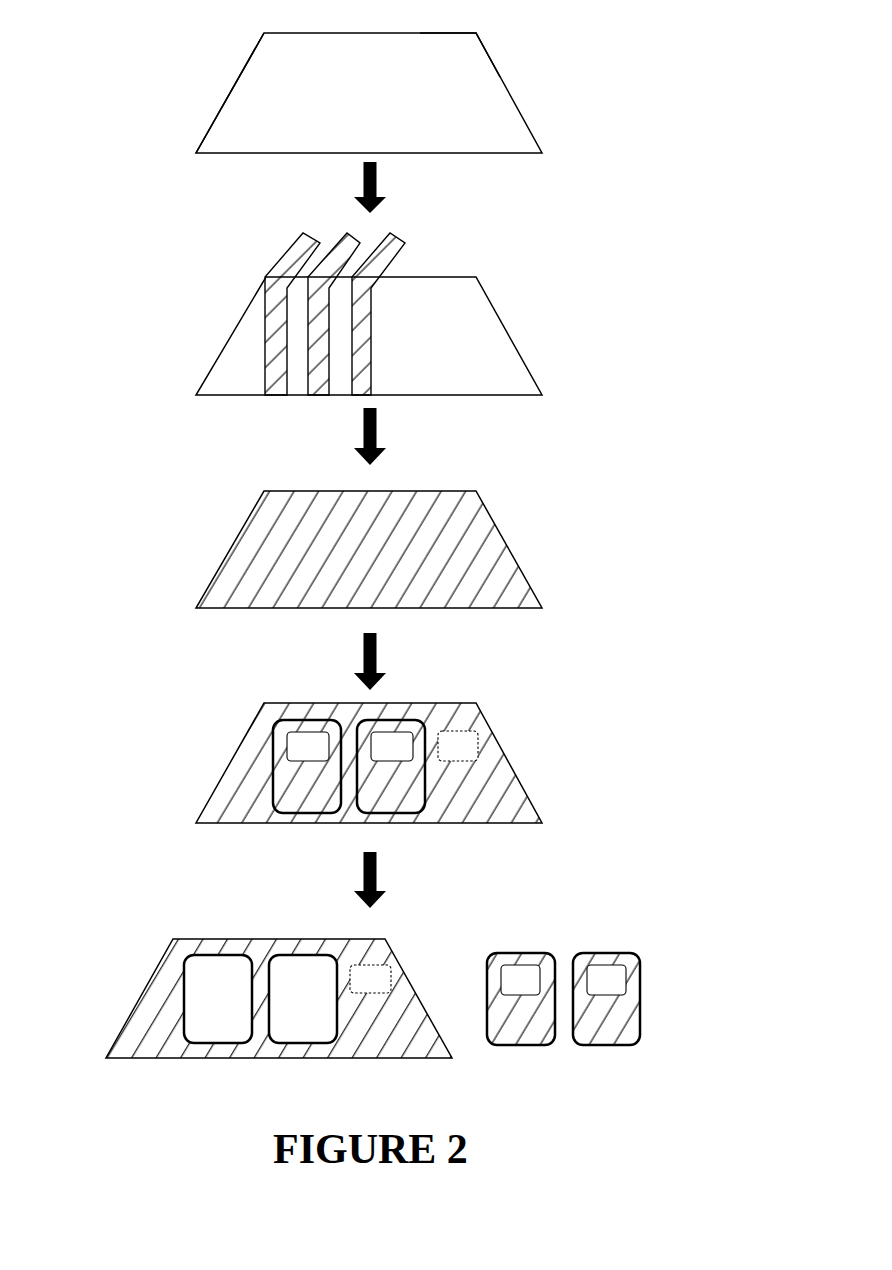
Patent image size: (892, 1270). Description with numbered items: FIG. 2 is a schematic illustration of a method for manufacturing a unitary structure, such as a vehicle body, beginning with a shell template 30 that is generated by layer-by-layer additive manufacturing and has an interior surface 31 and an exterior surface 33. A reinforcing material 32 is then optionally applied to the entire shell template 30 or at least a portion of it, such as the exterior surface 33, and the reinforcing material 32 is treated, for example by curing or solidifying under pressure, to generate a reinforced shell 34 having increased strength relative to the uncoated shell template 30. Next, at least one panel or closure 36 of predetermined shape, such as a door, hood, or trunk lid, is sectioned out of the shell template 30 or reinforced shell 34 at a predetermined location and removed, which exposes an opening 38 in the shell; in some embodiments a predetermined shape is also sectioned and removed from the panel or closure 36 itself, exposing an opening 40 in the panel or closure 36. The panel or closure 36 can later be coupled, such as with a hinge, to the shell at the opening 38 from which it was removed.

The shell template 30 is at (508, 93).
The interior surface 31 is at (233, 66).
The reinforcing material 32 is at (376, 238).
The exterior surface 33 is at (461, 45).
The reinforced shell 34 is at (503, 530).
The panel or closure 36 is at (287, 730).
The opening 38 is at (201, 968).
The opening 40 is at (515, 971).